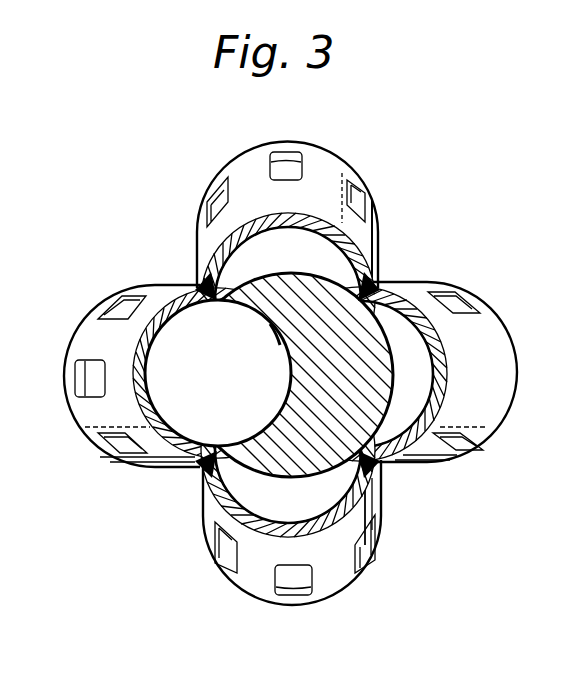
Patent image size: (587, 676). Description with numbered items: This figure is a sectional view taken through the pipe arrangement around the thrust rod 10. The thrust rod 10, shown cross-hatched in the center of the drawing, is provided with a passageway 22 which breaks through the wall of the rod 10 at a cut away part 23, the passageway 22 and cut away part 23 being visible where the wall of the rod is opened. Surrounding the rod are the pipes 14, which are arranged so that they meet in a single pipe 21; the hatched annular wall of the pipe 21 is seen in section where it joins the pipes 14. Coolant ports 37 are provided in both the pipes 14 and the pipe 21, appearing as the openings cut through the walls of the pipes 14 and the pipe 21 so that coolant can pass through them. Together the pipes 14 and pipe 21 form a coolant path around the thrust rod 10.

The thrust rod 10 is at (327, 475).
The pipes 14 is at (323, 597).
The single pipe 21 is at (223, 505).
The passageway 22 is at (272, 323).
The cut away part 23 is at (215, 404).
The coolant ports 37 is at (87, 378).